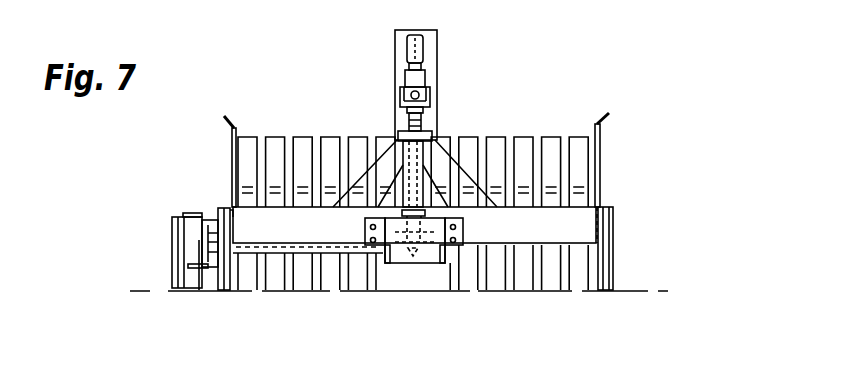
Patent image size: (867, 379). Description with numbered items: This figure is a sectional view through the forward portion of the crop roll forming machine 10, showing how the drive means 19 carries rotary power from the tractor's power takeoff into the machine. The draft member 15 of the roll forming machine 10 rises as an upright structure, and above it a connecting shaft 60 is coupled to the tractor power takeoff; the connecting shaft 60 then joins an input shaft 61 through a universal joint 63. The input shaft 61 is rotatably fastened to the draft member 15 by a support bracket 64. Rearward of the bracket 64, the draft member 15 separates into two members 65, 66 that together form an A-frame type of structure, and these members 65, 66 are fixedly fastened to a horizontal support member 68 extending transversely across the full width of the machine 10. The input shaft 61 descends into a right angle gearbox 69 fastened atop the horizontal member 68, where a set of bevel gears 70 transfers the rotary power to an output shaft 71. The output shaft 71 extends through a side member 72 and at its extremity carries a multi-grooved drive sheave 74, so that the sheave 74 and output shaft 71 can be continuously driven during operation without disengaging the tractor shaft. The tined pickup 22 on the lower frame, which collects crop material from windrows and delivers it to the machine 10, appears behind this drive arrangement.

The crop roll forming machine 10 is at (668, 191).
The draft member 15 is at (395, 52).
The drive means 19 is at (140, 252).
The pickup 22 is at (608, 157).
The connecting shaft 60 is at (417, 37).
The input shaft 61 is at (440, 147).
The universal joint 63 is at (432, 97).
The support bracket 64 is at (398, 135).
The A-frame member 65 is at (410, 179).
The A-frame member 66 is at (468, 179).
The horizontal support member 68 is at (322, 230).
The right angle gearbox 69 is at (445, 263).
The bevel gears 70 is at (413, 263).
The output shaft 71 is at (305, 255).
The side member 72 is at (226, 208).
The multi-grooved drive sheave 74 is at (171, 221).